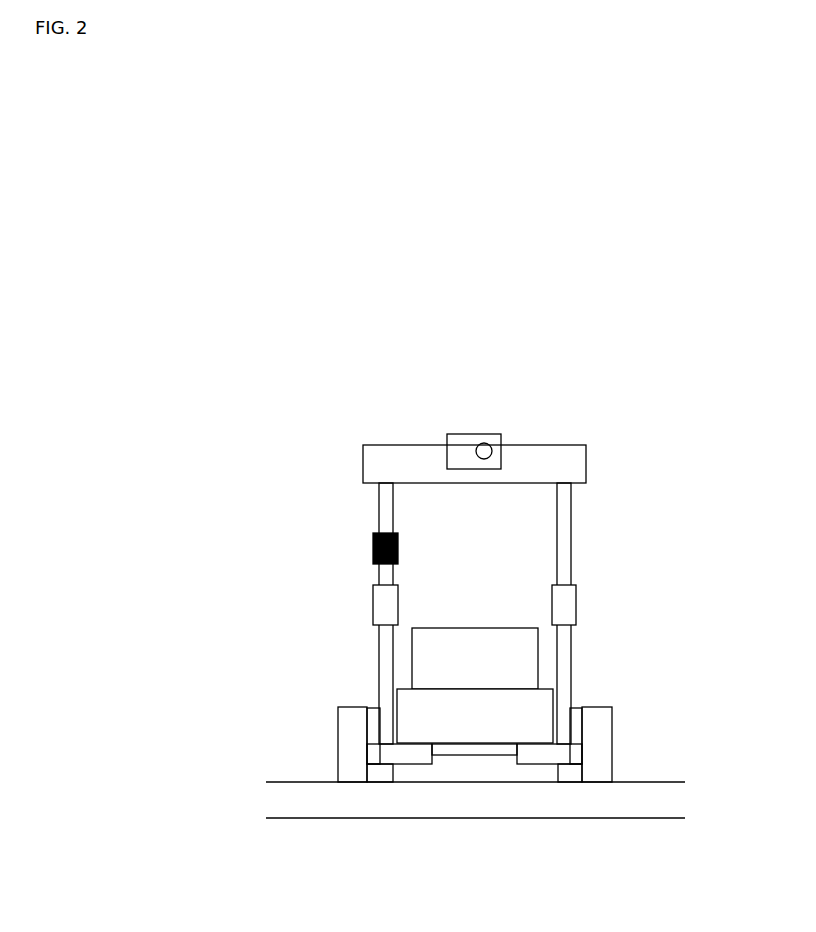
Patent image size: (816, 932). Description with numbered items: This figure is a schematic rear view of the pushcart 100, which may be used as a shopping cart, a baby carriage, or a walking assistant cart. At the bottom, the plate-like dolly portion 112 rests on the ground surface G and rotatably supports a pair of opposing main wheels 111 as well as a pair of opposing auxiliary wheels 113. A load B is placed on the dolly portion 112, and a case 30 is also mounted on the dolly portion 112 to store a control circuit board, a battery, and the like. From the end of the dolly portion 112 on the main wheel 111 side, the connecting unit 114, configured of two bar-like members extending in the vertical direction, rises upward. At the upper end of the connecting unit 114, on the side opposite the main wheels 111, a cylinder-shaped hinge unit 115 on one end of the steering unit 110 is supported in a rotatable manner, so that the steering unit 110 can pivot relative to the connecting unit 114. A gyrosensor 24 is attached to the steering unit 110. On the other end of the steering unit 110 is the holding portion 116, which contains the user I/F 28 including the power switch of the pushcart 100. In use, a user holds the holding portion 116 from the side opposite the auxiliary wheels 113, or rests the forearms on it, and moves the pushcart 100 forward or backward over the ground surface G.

The pushcart 100 is at (661, 408).
The holding portion 116 is at (586, 463).
The user I/F 28 is at (485, 430).
The steering unit 110 is at (571, 529).
The connecting unit 114 is at (379, 643).
The gyrosensor 24 is at (373, 546).
The hinge unit 115 is at (372, 602).
The load B is at (477, 636).
The case 30 is at (538, 708).
The main wheel 111 is at (338, 743).
The auxiliary wheel 113 is at (382, 775).
The dolly portion 112 is at (474, 775).
The ground surface G is at (643, 805).